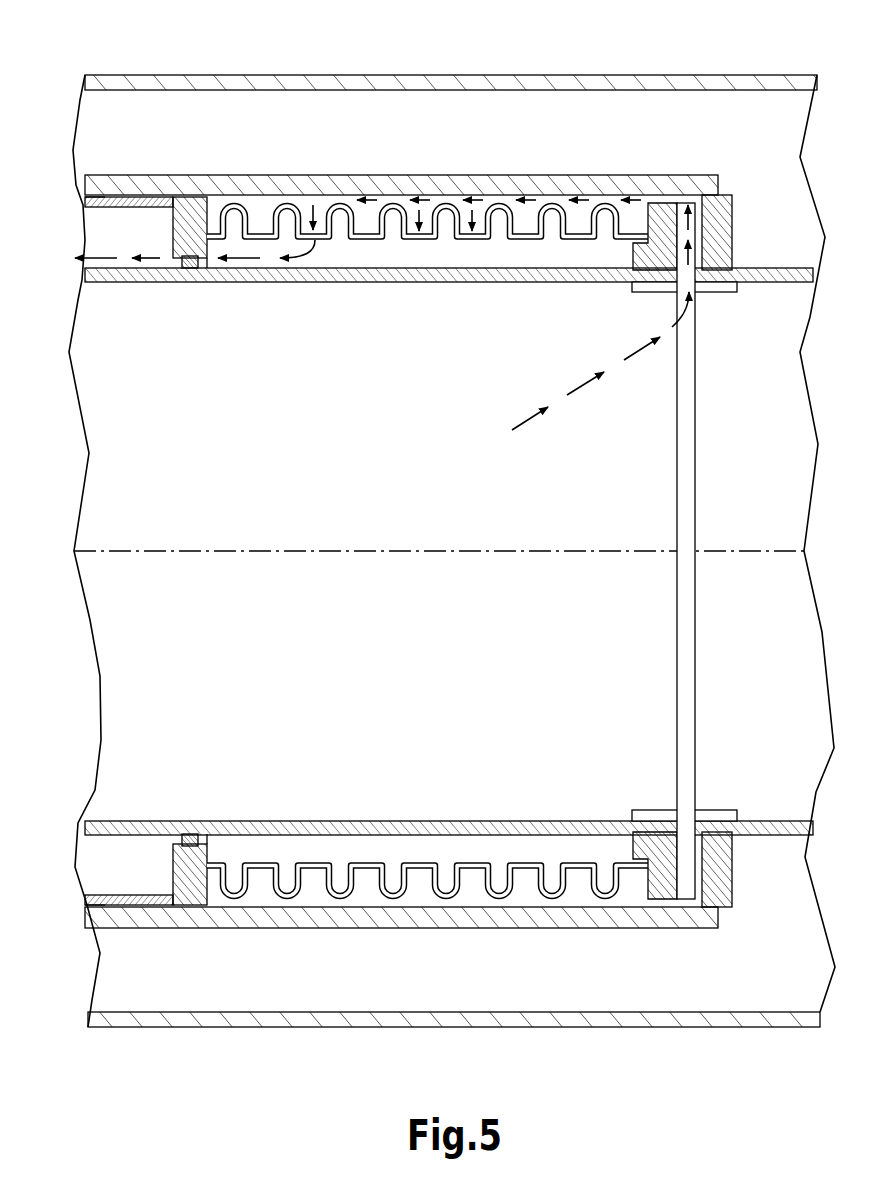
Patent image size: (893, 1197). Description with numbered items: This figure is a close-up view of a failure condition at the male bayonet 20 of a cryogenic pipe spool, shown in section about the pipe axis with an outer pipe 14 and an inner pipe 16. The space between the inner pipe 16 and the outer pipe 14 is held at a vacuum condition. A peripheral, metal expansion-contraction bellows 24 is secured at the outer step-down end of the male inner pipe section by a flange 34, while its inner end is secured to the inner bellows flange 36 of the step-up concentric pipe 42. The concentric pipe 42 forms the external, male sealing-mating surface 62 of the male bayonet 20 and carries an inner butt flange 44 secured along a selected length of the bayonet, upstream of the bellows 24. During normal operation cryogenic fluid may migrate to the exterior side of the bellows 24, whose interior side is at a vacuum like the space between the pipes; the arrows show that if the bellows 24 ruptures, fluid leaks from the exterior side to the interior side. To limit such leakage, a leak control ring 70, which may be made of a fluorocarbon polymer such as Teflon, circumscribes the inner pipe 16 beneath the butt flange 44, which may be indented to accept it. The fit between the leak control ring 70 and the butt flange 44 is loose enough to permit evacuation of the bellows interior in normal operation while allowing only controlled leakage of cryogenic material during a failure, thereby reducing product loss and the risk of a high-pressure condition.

The outer pipe 14 is at (256, 75).
The inner pipe 16 is at (100, 822).
The male bayonet 20 is at (160, 174).
The expansion-contraction bellows 24 is at (458, 216).
The flange 34 is at (667, 211).
The inner bellows flange 36 is at (193, 197).
The concentric pipe 42 is at (107, 196).
The butt flange 44 is at (170, 238).
The sealing-mating surface 62 is at (103, 200).
The leak control ring 70 is at (199, 268).